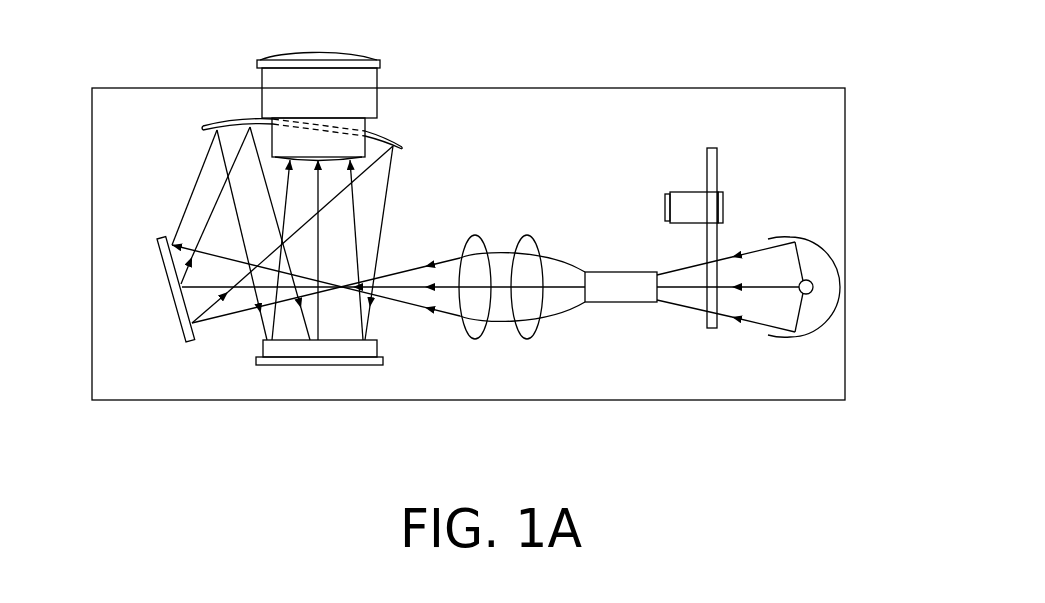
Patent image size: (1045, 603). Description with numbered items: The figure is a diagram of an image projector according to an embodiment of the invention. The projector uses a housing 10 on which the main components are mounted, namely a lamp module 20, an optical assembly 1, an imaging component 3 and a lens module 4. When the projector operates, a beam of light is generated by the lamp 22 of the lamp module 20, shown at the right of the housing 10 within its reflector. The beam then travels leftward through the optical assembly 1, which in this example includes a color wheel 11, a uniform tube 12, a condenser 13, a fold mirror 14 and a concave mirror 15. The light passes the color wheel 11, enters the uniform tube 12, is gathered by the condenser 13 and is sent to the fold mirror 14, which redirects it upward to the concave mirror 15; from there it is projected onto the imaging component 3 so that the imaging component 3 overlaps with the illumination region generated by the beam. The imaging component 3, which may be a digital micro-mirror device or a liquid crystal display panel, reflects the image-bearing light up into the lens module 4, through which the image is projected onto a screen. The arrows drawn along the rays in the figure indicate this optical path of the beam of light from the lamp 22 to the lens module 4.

The optical assembly 1 is at (730, 150).
The imaging component 3 is at (316, 365).
The lens module 4 is at (357, 82).
The housing 10 is at (845, 150).
The color wheel 11 is at (712, 329).
The uniform tube 12 is at (620, 303).
The condenser 13 is at (477, 340).
The fold mirror 14 is at (157, 237).
The concave mirror 15 is at (203, 127).
The lamp module 20 is at (823, 236).
The lamp 22 is at (813, 287).